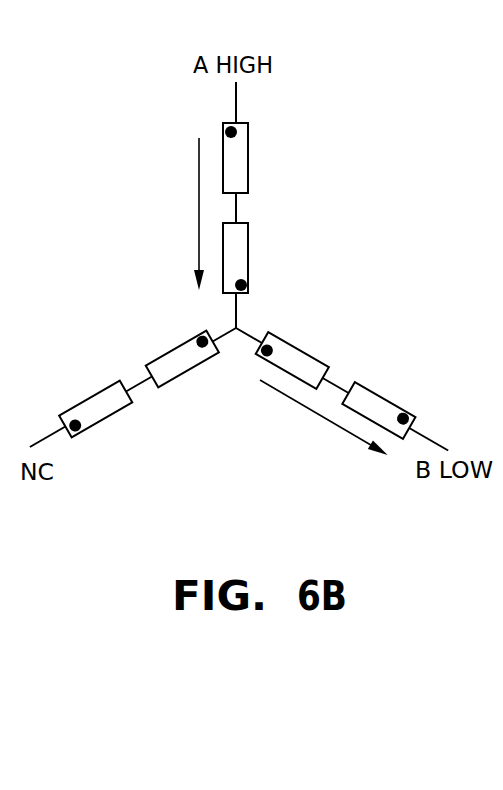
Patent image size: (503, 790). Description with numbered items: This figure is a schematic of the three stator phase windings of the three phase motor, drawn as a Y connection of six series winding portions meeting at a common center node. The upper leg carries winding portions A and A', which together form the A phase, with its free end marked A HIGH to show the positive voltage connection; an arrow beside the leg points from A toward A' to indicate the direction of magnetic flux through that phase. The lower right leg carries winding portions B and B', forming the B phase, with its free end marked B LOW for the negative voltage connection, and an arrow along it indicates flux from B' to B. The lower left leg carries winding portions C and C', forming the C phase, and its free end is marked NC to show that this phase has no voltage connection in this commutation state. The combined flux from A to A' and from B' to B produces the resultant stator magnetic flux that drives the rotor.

The first phase winding portion of phase A is at (246, 158).
The second phase winding portion of phase A A' is at (250, 258).
The first phase winding portion of phase B is at (292, 356).
The second phase winding portion of phase B B' is at (378, 405).
The first phase winding portion of phase C is at (95, 404).
The second phase winding portion of phase C C' is at (182, 355).